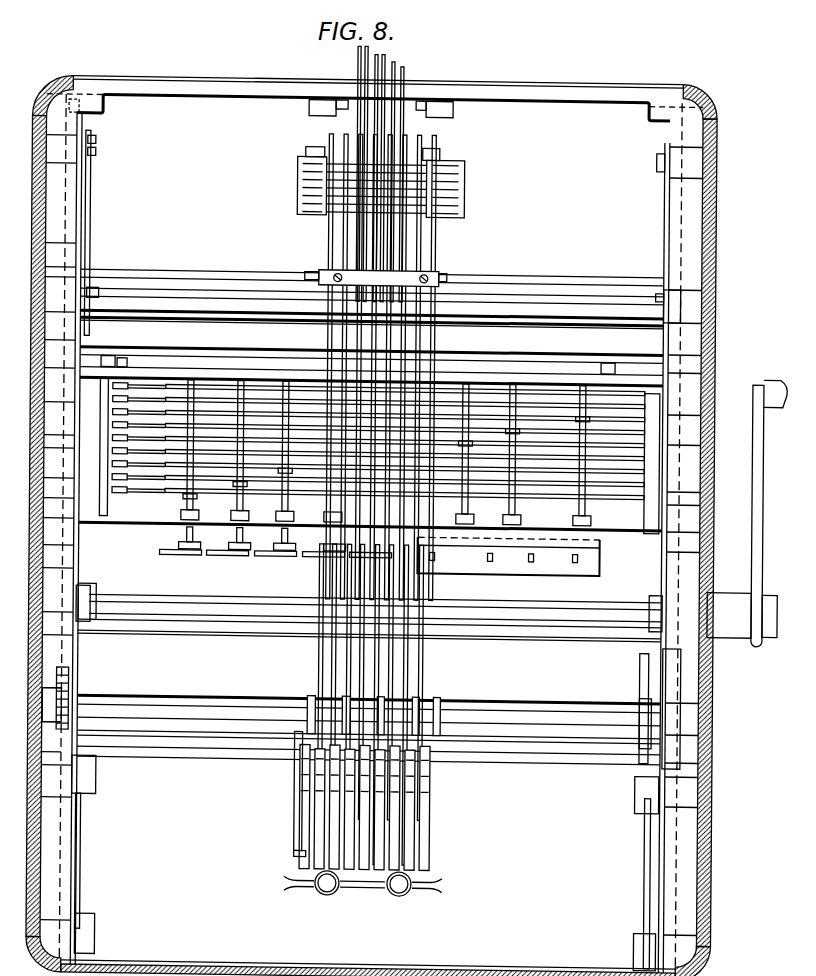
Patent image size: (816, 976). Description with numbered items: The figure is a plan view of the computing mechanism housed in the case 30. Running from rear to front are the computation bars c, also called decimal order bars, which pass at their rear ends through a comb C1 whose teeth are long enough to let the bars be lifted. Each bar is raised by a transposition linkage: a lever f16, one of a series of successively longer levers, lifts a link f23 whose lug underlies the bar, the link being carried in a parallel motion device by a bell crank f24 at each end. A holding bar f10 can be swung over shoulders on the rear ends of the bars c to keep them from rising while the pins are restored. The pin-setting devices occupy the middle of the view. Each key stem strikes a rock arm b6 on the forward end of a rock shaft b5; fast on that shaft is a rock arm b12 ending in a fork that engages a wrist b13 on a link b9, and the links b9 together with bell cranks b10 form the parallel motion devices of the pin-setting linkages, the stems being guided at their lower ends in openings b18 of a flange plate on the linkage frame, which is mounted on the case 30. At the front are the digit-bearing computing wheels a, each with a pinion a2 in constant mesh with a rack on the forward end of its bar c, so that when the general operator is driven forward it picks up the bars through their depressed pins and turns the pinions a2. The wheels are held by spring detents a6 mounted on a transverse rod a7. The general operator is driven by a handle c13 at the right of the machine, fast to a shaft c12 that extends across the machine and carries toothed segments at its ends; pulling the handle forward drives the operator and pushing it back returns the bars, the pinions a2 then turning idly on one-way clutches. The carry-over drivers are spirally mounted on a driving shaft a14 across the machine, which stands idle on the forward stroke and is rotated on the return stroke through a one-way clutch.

The case 30 is at (704, 780).
The lever f16 is at (396, 74).
The link f23 is at (446, 170).
The bell crank f24 is at (300, 194).
The computation bar c is at (421, 233).
The comb C1 is at (314, 276).
The holding bar f10 is at (598, 318).
The rock arm b12 is at (193, 498).
The wrist b13 is at (241, 488).
The rock shaft b5 is at (463, 505).
The link b9 is at (518, 492).
The bell crank b10 is at (582, 503).
The rock arm b6 is at (209, 558).
The opening b18 is at (529, 557).
The shaft c12 is at (222, 612).
The handle c13 is at (759, 476).
The driving shaft a14 is at (519, 699).
The spring detent a6 is at (430, 657).
The computing wheel a is at (370, 870).
The transverse rod a7 is at (304, 740).
The pinion a2 is at (298, 857).